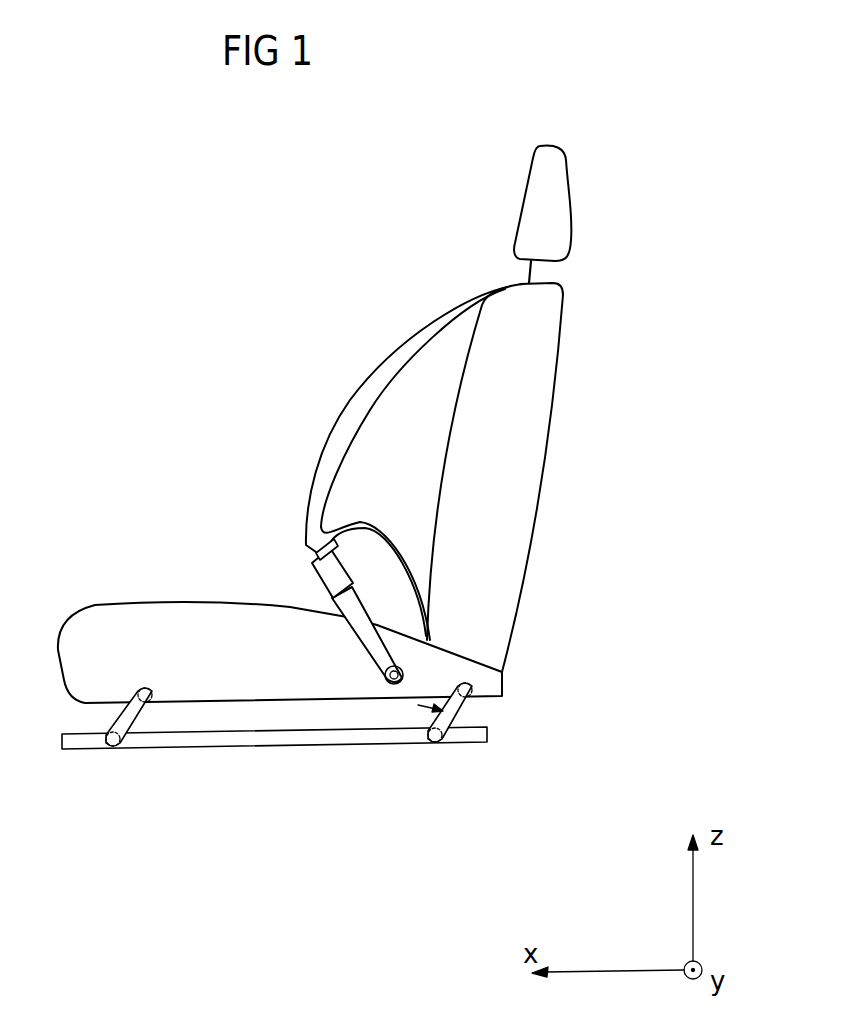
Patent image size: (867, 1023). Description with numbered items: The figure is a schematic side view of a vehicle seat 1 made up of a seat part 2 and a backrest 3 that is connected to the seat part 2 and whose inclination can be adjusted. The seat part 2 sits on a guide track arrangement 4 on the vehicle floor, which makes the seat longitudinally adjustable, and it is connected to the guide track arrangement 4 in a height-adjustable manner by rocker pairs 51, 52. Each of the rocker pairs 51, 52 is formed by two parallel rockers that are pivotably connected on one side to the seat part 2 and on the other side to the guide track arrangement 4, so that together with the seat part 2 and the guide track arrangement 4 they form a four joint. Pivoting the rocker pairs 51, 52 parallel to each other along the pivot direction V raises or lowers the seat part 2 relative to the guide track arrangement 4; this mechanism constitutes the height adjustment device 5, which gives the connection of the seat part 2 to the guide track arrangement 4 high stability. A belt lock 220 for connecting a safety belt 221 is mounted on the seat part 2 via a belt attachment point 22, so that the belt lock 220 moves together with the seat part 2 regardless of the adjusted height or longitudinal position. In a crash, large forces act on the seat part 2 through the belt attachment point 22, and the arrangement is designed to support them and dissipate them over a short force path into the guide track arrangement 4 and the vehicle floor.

The vehicle seat 1 is at (632, 238).
The seat part 2 is at (87, 683).
The backrest 3 is at (507, 538).
The guide track arrangement 4 is at (78, 739).
The height adjustment device 5 is at (490, 718).
The belt attachment point 22 is at (393, 682).
The rocker pair 51 is at (452, 711).
The rocker pair 52 is at (130, 718).
The belt lock 220 is at (333, 573).
The safety belt 221 is at (350, 422).
The pivot direction V is at (462, 732).